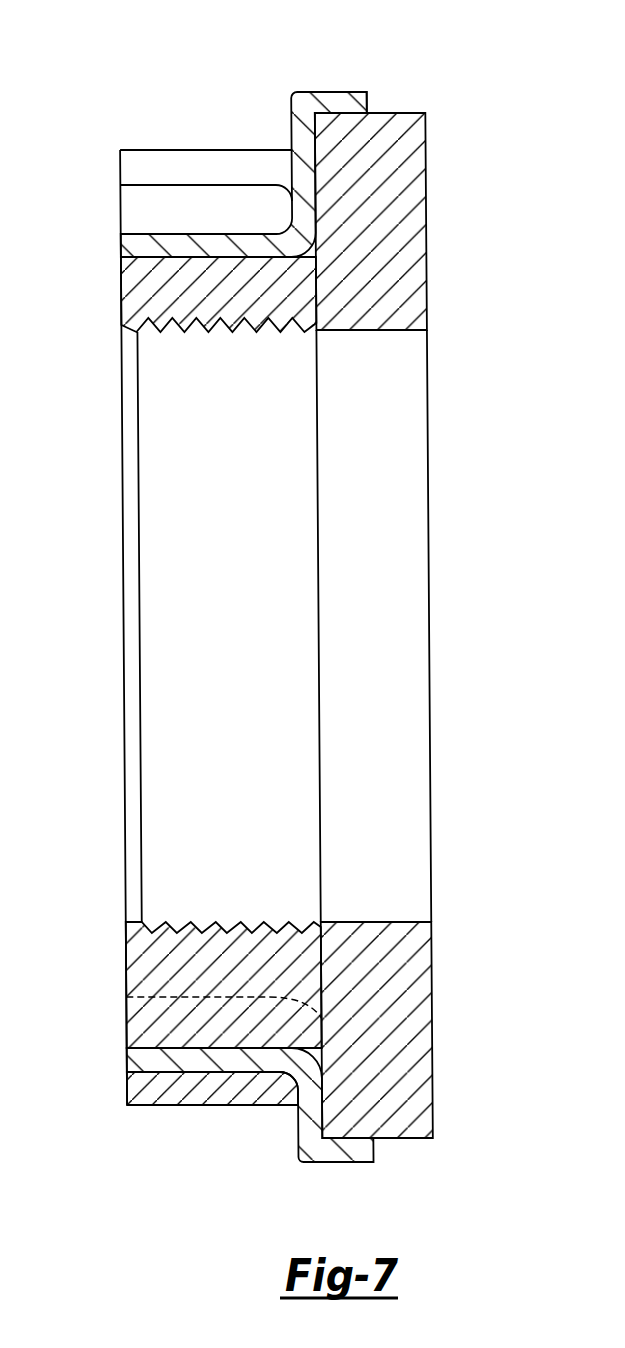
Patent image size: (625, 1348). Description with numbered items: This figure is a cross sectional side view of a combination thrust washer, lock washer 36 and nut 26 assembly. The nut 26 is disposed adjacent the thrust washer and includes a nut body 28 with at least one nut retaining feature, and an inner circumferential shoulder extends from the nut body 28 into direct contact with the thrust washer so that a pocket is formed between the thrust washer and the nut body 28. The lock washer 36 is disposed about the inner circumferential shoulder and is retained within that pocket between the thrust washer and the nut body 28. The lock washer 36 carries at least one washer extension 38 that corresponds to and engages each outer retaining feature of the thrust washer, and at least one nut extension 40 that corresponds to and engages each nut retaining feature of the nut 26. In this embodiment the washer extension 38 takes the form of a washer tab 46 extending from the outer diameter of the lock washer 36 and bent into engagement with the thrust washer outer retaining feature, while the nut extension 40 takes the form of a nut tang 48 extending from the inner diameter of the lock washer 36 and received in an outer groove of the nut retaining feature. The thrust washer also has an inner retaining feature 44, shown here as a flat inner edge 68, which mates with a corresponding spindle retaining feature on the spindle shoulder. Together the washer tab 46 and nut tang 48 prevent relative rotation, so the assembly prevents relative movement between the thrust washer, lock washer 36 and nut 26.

The nut 26 is at (138, 1106).
The nut body 28 is at (127, 288).
The lock washer 36 is at (308, 1164).
The washer extension 38 is at (308, 92).
The nut extension 40 is at (152, 186).
The inner retaining feature 44 is at (403, 921).
The washer tab 46 is at (335, 92).
The nut tang 48 is at (200, 202).
The flat inner edge 68 is at (353, 920).